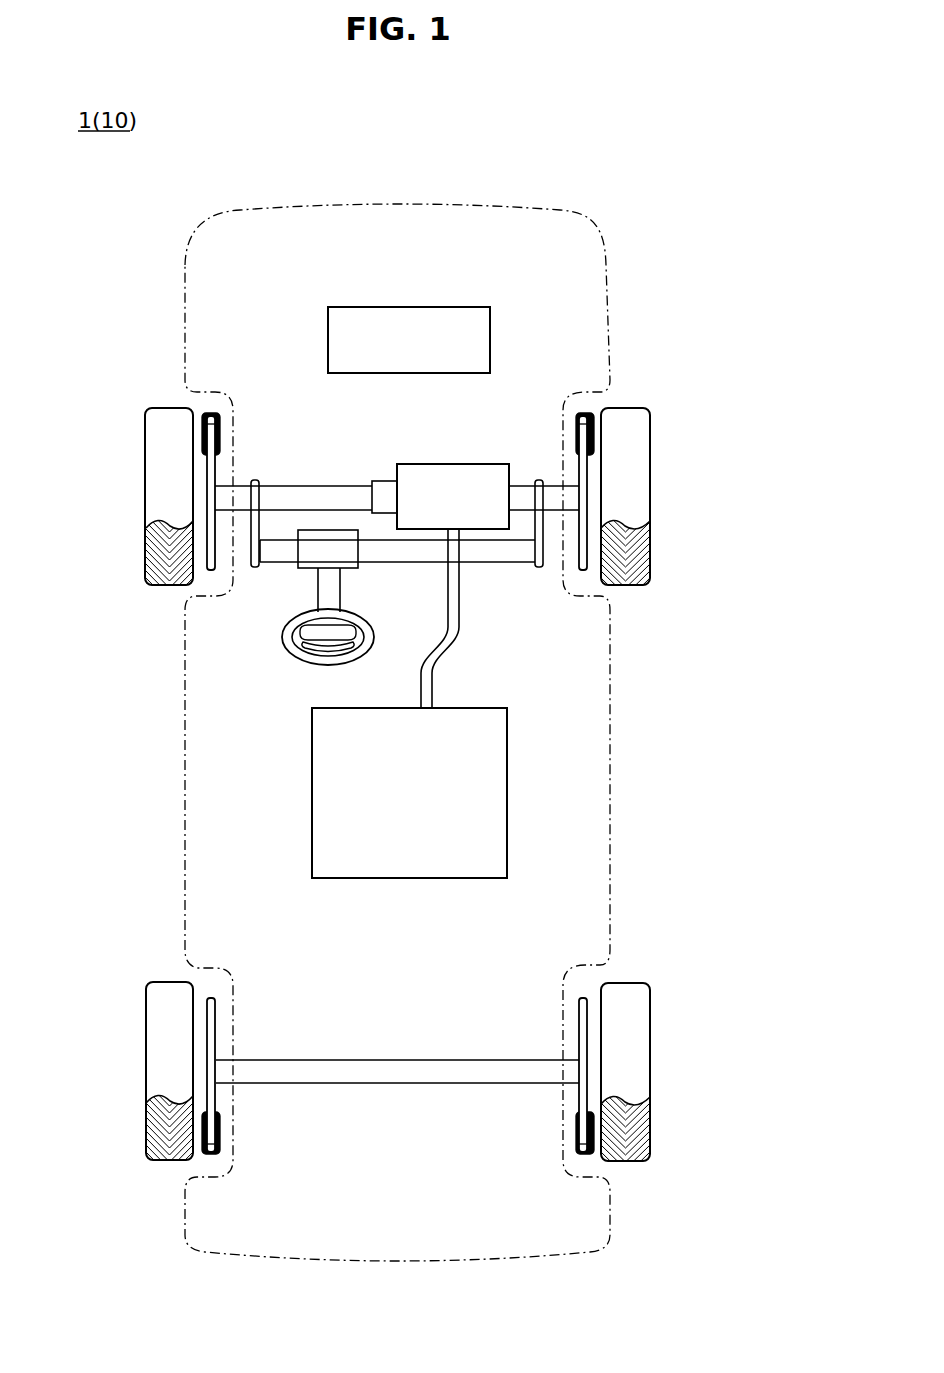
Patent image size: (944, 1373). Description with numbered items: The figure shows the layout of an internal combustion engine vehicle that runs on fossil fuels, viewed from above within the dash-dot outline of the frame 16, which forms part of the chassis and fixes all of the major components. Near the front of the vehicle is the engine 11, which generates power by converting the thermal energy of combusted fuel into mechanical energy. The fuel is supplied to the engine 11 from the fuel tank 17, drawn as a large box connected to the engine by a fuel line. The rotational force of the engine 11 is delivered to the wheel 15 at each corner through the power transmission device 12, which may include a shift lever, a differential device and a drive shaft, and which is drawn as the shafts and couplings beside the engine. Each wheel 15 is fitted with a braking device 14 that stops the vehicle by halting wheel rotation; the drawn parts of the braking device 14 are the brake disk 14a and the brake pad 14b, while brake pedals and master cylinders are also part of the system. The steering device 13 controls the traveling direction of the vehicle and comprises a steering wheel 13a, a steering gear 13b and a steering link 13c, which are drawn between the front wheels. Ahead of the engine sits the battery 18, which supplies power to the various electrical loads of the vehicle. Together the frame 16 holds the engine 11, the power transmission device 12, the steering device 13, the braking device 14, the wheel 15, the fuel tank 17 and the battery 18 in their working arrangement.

The engine 11 is at (455, 464).
The power transmission device 12 is at (388, 515).
The steering device 13 is at (214, 629).
The steering wheel 13a is at (300, 652).
The steering gear 13b is at (298, 552).
The steering link 13c is at (260, 556).
The braking device 14 is at (72, 430).
The brake disk 14a is at (213, 499).
The brake pad 14b is at (200, 412).
The wheel 15 is at (396, 784).
The frame 16 is at (185, 1218).
The fuel tank 17 is at (507, 753).
The battery 18 is at (490, 343).